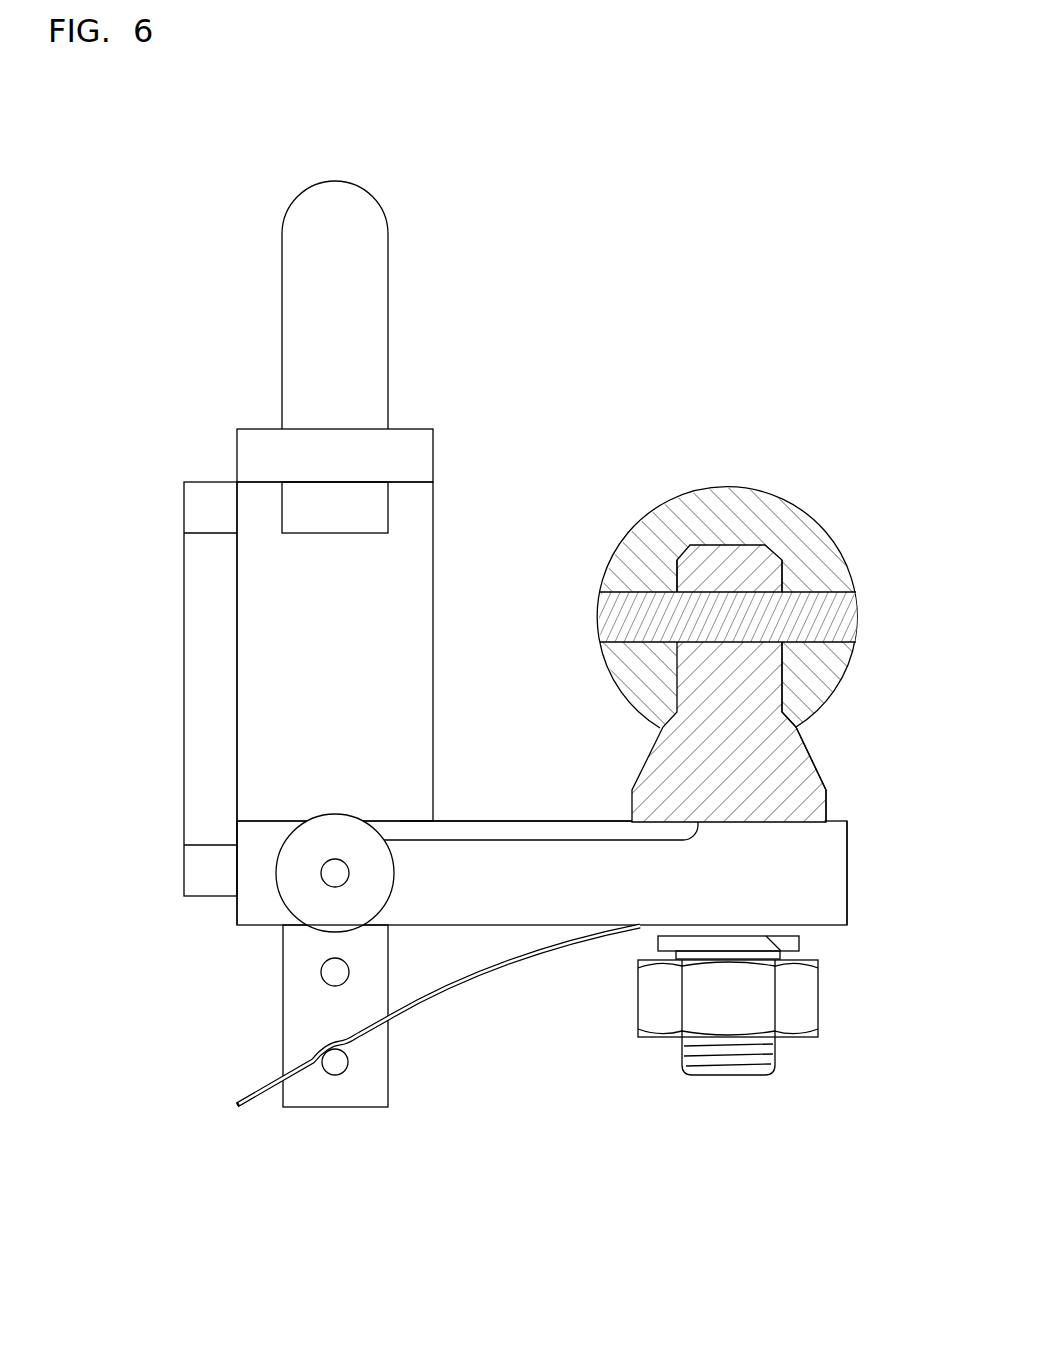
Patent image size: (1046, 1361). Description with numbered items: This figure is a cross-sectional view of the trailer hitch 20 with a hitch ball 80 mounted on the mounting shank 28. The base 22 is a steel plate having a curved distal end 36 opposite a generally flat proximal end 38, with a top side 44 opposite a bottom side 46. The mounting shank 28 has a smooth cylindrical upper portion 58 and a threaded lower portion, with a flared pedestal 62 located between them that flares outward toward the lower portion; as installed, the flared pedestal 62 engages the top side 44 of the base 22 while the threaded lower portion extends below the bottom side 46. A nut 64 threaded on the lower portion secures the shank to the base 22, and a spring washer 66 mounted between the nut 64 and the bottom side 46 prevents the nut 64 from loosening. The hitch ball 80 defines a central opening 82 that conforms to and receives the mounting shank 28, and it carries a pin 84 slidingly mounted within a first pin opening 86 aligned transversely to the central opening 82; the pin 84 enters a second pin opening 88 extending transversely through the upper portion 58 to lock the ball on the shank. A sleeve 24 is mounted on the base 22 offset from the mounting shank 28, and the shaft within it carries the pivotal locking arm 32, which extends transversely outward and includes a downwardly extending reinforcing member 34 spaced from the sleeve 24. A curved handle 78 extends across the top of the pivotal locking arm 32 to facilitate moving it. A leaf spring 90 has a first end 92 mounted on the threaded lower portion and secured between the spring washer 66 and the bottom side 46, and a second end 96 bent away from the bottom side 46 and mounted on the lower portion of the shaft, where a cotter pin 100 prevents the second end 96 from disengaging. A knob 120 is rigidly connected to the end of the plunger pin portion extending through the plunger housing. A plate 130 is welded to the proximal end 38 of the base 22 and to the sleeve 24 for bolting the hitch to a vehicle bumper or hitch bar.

The trailer hitch 20 is at (226, 226).
The curved handle 78 is at (377, 200).
The pivotal locking arm 32 is at (423, 429).
The reinforcing member 34 is at (388, 514).
The sleeve 24 is at (434, 642).
The plate 130 is at (184, 697).
The base 22 is at (847, 853).
The top side 44 is at (517, 821).
The curved distal end 36 is at (847, 885).
The proximal end 38 is at (234, 918).
The knob 120 is at (394, 870).
The bottom side 46 is at (478, 926).
The cotter pin 100 is at (335, 1076).
The leaf spring 90 is at (532, 957).
The second end 96 is at (235, 1107).
The hitch ball 80 is at (812, 515).
The second pin opening 88 is at (716, 592).
The central opening 82 is at (782, 573).
The first pin opening 86 is at (643, 592).
The pin 84 is at (858, 617).
The upper portion 58 is at (783, 688).
The mounting shank 28 is at (808, 753).
The flared pedestal 62 is at (826, 806).
The first end 92 is at (820, 930).
The spring washer 66 is at (799, 943).
The nut 64 is at (818, 1010).